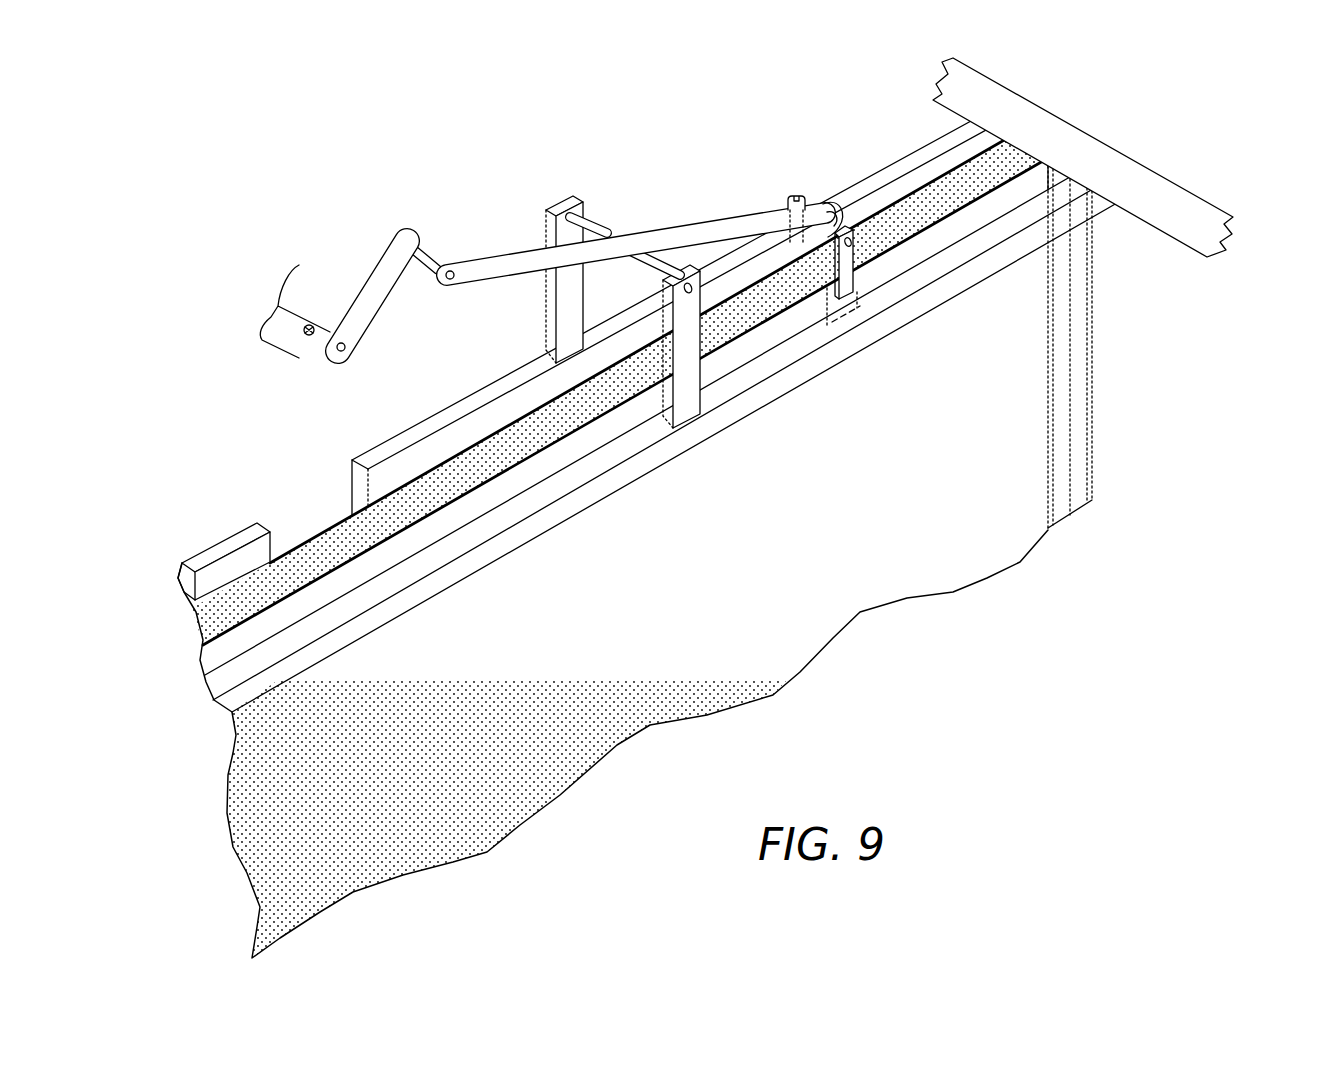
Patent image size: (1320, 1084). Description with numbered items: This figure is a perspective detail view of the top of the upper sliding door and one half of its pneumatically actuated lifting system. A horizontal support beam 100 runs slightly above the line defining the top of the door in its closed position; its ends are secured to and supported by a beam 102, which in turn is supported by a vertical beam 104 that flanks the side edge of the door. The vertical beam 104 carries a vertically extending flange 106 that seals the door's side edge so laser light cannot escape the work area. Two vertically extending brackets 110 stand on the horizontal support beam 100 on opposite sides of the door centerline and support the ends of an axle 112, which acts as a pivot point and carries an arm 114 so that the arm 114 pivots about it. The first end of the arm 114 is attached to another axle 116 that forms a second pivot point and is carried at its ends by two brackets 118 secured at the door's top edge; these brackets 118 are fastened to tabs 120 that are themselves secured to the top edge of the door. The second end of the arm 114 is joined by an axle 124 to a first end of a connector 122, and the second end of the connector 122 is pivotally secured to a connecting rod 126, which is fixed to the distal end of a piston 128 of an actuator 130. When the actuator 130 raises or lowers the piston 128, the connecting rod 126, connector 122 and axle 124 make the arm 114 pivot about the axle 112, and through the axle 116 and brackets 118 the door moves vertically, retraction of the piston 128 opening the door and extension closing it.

The horizontal support beam 100 is at (922, 140).
The beam 102 is at (1163, 187).
The vertical beam 104 is at (1023, 130).
The vertically extending flange 106 is at (1062, 502).
The vertically extending bracket 110 is at (557, 208).
The axle 112 is at (597, 228).
The arm 114 is at (728, 222).
The axle 116 is at (830, 213).
The bracket 118 is at (797, 195).
The tab 120 is at (862, 303).
The connector 122 is at (373, 273).
The axle 124 is at (427, 267).
The connecting rod 126 is at (285, 322).
The piston 128 is at (307, 445).
The actuator 130 is at (293, 533).